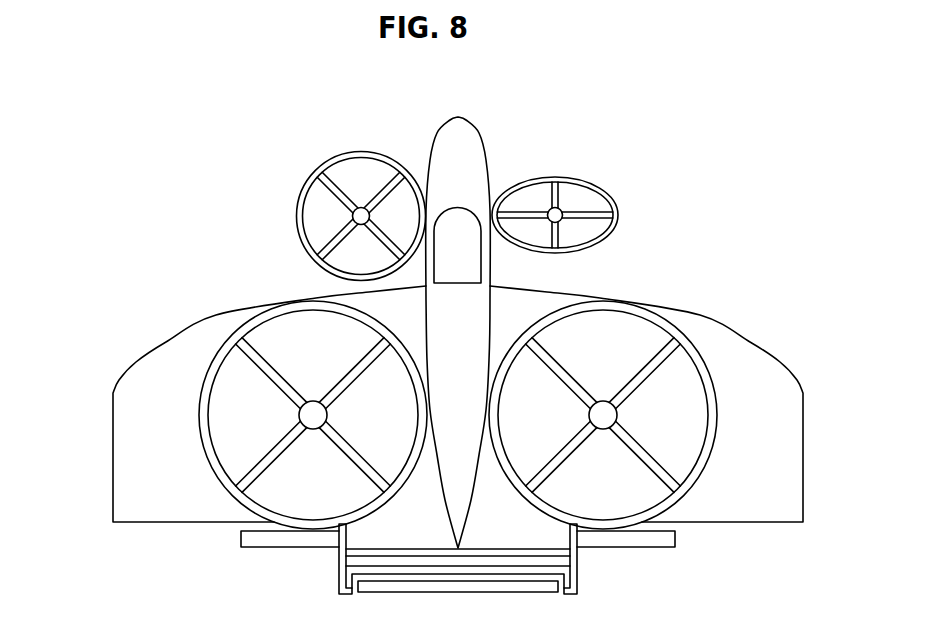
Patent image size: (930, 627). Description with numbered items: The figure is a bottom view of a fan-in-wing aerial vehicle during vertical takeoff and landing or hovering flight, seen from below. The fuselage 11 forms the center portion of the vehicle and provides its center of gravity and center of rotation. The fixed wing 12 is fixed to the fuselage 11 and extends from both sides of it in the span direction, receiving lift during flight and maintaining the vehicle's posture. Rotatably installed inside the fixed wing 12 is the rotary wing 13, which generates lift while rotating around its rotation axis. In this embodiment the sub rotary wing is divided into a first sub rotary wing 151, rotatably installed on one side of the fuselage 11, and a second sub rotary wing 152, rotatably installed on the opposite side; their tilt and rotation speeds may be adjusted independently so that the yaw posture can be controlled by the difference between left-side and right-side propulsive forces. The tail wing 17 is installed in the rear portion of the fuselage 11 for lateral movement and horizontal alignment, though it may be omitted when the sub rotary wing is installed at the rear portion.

The fuselage 11 is at (460, 155).
The fixed wing 12 is at (142, 385).
The rotary wing 13 is at (248, 352).
The first sub rotary wing 151 is at (318, 161).
The second sub rotary wing 152 is at (590, 180).
The tail wing 17 is at (340, 578).